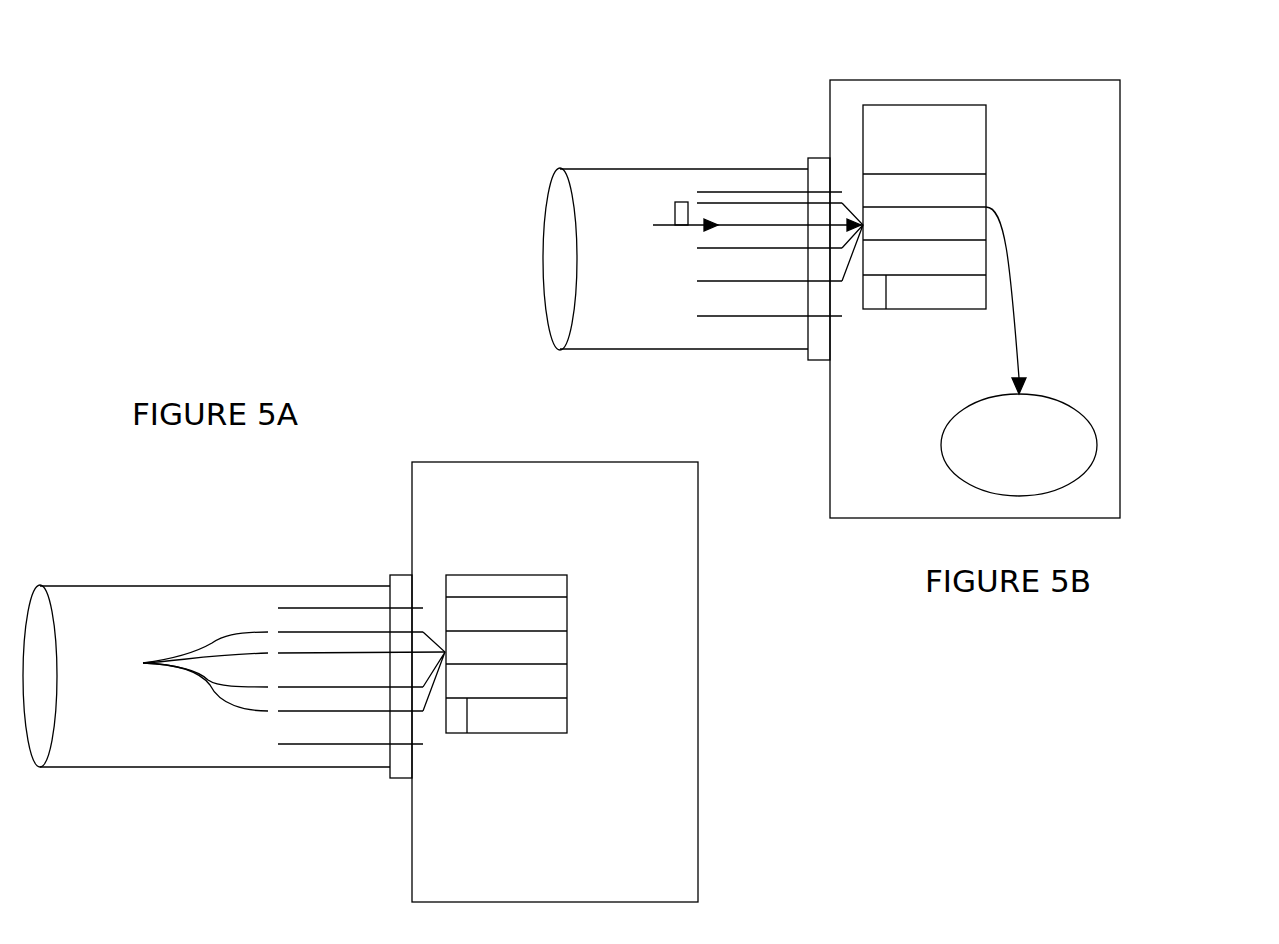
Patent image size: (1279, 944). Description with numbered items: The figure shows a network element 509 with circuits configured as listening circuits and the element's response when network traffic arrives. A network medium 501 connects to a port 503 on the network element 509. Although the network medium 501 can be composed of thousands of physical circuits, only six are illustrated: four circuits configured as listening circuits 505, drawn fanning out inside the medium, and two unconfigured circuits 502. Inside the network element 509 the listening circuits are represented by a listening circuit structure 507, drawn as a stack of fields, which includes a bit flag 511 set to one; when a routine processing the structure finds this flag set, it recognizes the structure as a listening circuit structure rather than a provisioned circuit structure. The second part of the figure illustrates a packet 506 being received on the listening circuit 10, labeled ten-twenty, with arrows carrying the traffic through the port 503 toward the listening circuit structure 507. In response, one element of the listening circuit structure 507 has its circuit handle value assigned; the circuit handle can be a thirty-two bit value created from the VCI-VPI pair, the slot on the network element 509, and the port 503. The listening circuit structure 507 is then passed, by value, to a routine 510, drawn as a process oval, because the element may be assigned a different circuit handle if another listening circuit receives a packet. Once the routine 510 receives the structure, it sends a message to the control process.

In FIG. 5A, the network medium 501 is at (112, 586).
In FIG. 5A, the unconfigured circuits 502 is at (279, 590).
In FIG. 5A, the port 503 is at (400, 778).
In FIG. 5A, the listening circuits 505 is at (184, 671).
In FIG. 5B, the packet 506 is at (682, 202).
In FIG. 5A, the listening circuit structure 507 is at (505, 575).
In FIG. 5B, the listening circuit structure 507 is at (920, 105).
In FIG. 5A, the network element 509 is at (555, 460).
In FIG. 5B, the routine 510 is at (1098, 445).
In FIG. 5A, the bit flag 511 is at (453, 740).
In FIG. 5B, the bit flag 511 is at (875, 317).
In FIG. 5B, the listening circuit 10 is at (732, 228).